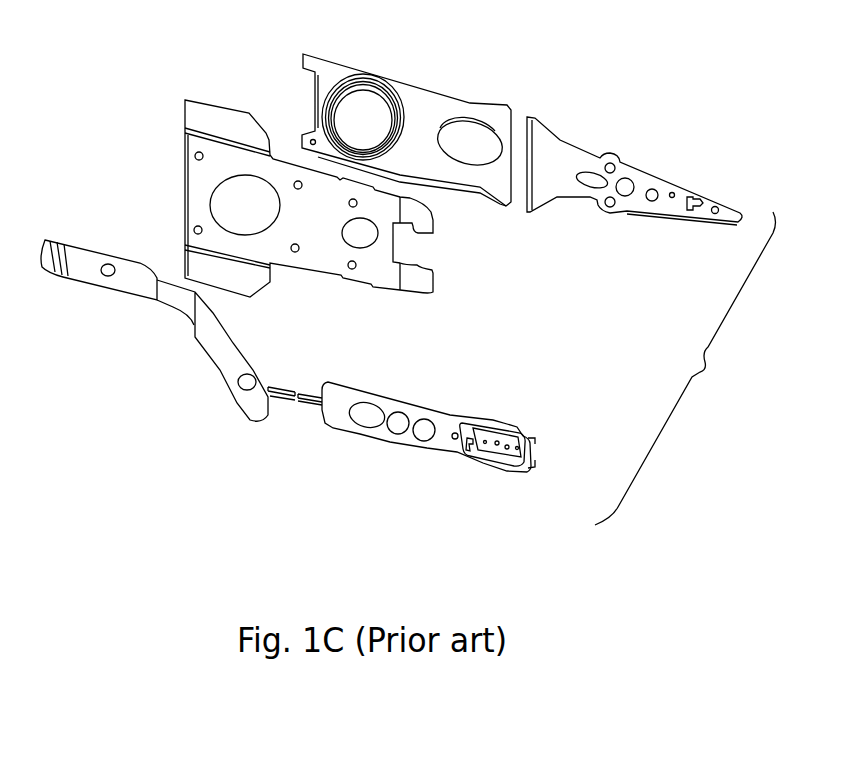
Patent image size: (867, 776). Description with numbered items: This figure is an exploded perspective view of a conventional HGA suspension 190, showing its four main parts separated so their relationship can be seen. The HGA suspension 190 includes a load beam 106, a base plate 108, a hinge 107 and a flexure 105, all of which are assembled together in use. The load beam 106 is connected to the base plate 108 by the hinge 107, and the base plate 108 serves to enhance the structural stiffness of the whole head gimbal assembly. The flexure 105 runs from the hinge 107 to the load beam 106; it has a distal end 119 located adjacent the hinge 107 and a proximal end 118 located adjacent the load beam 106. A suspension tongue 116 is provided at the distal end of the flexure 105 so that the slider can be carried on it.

The flexure 105 is at (340, 405).
The load beam 106 is at (553, 158).
The hinge 107 is at (373, 270).
The base plate 108 is at (415, 110).
The suspension tongue 116 is at (497, 443).
The proximal end 118 is at (473, 452).
The distal end 119 is at (87, 262).
The HGA suspension 190 is at (685, 368).